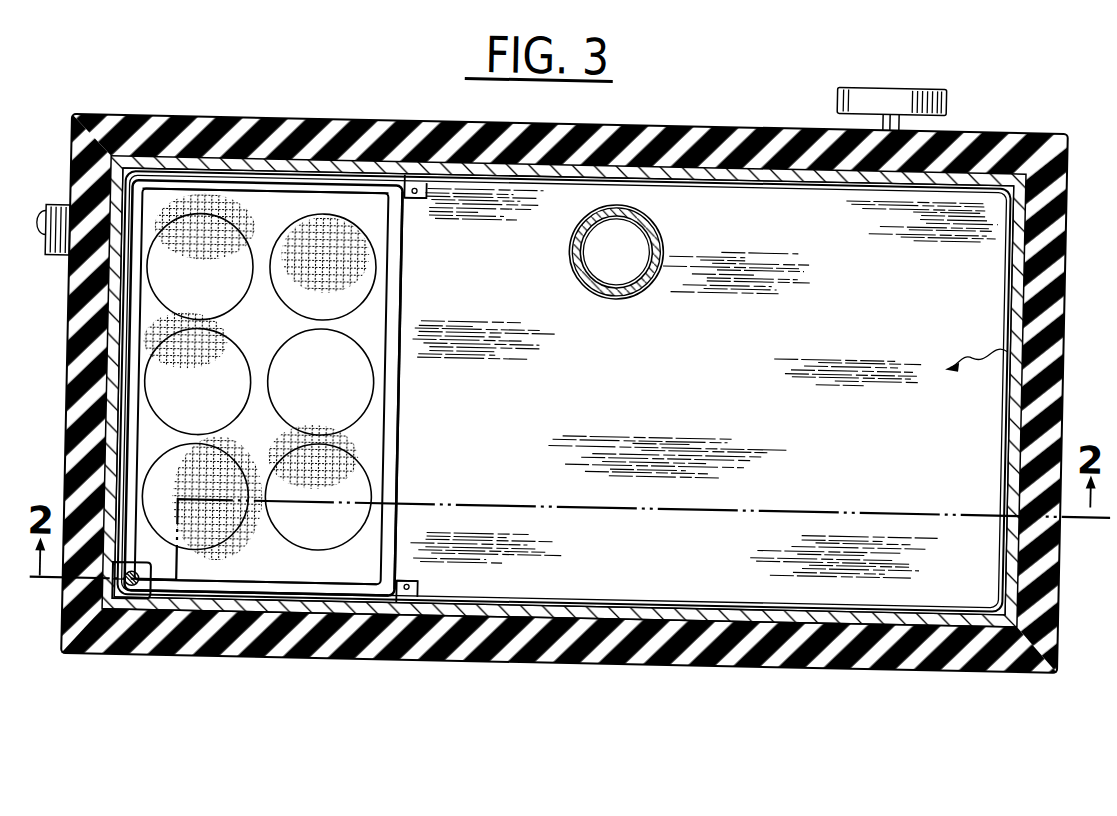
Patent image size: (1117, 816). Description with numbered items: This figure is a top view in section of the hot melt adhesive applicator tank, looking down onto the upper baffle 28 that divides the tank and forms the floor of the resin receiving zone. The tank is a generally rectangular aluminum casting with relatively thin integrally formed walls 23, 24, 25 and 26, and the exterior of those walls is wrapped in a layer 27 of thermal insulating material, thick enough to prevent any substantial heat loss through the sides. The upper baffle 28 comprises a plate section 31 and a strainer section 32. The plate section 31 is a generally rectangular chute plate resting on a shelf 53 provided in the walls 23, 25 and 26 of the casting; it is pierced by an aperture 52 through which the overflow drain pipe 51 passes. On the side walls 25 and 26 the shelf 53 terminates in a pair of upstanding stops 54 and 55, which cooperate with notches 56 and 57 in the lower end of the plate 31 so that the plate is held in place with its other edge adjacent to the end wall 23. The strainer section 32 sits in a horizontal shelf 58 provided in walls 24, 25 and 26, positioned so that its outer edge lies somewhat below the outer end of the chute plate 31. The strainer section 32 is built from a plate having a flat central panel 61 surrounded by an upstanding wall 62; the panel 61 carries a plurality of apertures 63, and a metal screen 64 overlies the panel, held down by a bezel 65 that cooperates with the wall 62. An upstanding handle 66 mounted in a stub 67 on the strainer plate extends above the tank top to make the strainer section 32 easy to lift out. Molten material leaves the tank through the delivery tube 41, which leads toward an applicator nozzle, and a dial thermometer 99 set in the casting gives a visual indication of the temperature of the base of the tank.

The wall 23 is at (1018, 396).
The wall 24 is at (96, 322).
The wall 25 is at (617, 634).
The wall 26 is at (668, 165).
The layer of thermal insulating material 27 is at (1066, 251).
The upper baffle 28 is at (1046, 281).
The plate section 31 is at (698, 406).
The strainer section 32 is at (352, 326).
The delivery tube 41 is at (64, 202).
The overflow drain pipe 51 is at (600, 246).
The aperture 52 is at (659, 236).
The shelf 53 is at (1008, 240).
The upstanding stop 54 is at (428, 591).
The upstanding stop 55 is at (427, 181).
The notch 56 is at (421, 574).
The notch 57 is at (418, 193).
The horizontal shelf 58 is at (344, 178).
The flat central panel 61 is at (259, 196).
The upstanding wall 62 is at (402, 606).
The apertures 63 is at (173, 483).
The metal screen 64 is at (352, 452).
The bezel 65 is at (343, 581).
The upstanding handle 66 is at (142, 581).
The stub 67 is at (151, 589).
The dial thermometer 99 is at (886, 80).